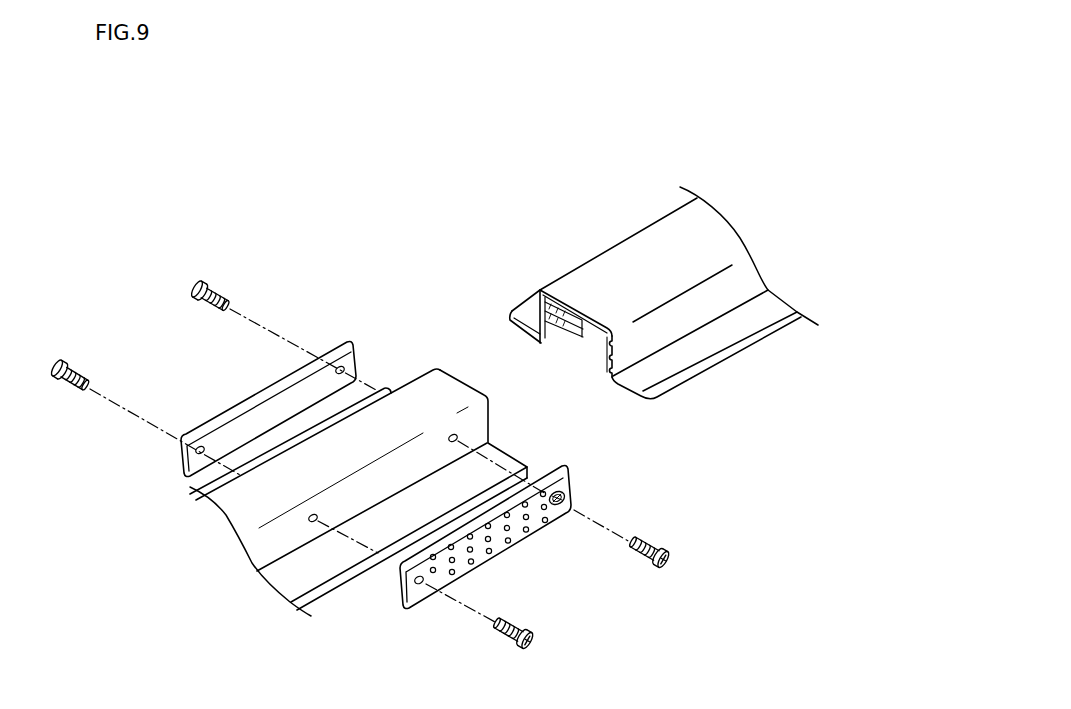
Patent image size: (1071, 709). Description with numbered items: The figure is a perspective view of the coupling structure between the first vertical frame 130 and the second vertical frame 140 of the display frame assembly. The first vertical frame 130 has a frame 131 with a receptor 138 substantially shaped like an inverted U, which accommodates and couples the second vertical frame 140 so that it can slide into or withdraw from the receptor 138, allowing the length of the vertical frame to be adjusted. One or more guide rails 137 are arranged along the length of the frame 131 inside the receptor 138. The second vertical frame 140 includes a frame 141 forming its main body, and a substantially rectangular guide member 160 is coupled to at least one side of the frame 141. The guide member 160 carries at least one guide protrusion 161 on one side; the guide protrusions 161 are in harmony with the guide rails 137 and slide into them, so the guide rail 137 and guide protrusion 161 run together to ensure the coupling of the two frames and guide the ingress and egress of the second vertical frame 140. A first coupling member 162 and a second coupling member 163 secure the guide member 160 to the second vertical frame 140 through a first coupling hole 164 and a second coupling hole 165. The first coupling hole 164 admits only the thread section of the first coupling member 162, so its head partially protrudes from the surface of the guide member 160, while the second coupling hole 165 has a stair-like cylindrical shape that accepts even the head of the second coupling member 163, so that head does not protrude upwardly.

The first vertical frame 130 is at (633, 208).
The frame 131 is at (610, 268).
The guide rail 137 is at (563, 332).
The receptor 138 is at (600, 353).
The second vertical frame 140 is at (457, 353).
The frame 141 is at (418, 388).
The guide member 160 is at (568, 486).
The guide protrusion 161 is at (552, 521).
The first coupling member 162 is at (55, 358).
The second coupling member 163 is at (196, 280).
The first coupling hole 164 is at (420, 588).
The second coupling hole 165 is at (566, 501).